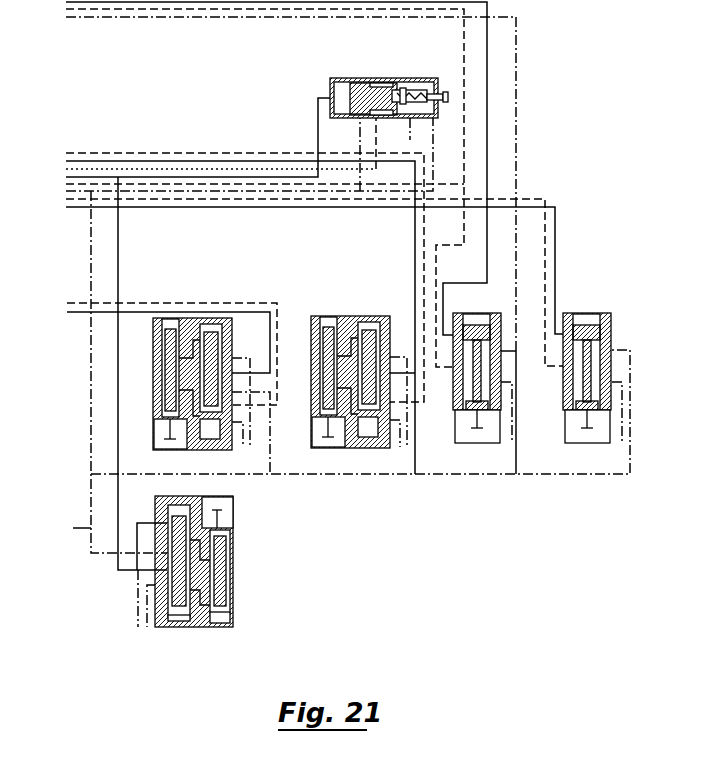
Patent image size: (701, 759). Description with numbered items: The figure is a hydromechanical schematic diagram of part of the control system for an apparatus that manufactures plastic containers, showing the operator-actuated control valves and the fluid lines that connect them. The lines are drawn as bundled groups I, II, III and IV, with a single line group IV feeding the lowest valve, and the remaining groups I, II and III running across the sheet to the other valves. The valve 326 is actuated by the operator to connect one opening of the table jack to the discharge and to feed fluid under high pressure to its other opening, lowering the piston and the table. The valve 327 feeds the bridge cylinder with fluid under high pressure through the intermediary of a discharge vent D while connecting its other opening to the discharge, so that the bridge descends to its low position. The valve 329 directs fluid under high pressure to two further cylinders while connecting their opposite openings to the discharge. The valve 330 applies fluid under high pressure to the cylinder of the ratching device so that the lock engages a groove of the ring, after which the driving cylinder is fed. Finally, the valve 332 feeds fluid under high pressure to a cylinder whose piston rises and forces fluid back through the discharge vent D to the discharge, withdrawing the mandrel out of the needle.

The line group I is at (61, 2).
The line group II is at (66, 151).
The line group III is at (68, 301).
The line group IV is at (73, 531).
The discharge vent D is at (373, 78).
The valve 326 is at (345, 448).
The valve 327 is at (193, 628).
The valve 329 is at (202, 450).
The valve 330 is at (572, 314).
The valve 332 is at (470, 314).